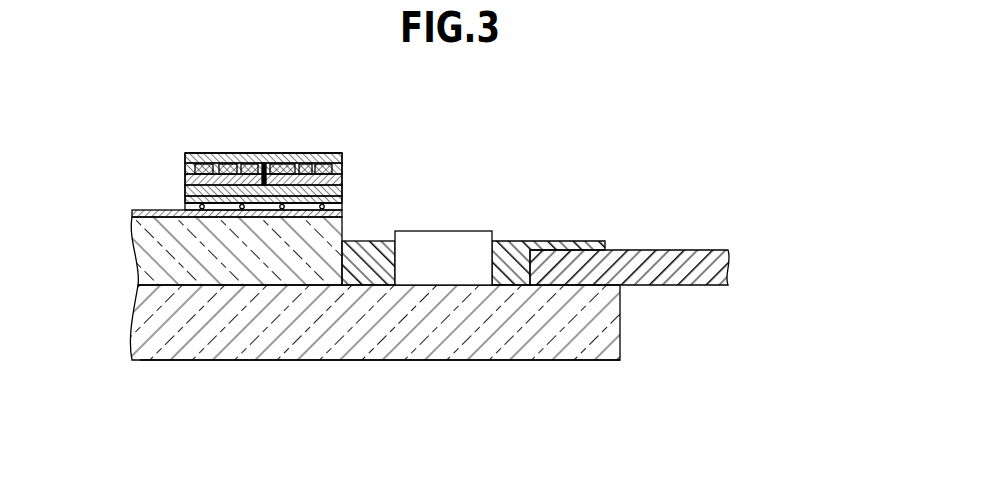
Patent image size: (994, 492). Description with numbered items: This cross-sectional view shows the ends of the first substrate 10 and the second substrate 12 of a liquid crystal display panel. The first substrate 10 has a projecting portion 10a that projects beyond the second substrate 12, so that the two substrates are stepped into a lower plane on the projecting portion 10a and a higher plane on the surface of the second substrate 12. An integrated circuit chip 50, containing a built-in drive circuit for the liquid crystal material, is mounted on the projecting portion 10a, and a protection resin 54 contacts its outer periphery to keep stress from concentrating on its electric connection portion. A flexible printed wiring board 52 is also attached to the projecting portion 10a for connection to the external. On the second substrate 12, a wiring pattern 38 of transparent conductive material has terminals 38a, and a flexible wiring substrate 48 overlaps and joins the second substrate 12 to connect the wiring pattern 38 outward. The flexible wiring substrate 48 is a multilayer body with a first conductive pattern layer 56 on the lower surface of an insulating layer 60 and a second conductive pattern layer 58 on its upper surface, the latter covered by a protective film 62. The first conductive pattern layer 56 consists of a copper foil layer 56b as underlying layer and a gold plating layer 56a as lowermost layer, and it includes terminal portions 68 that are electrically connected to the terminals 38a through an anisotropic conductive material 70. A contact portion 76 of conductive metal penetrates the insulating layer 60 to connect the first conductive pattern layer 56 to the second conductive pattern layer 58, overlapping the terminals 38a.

The first substrate 10 is at (620, 334).
The projecting portion 10a is at (478, 360).
The second substrate 12 is at (302, 271).
The wiring pattern 38 is at (343, 213).
The terminals 38a is at (254, 205).
The flexible wiring substrate 48 is at (323, 239).
The integrated circuit chip 50 is at (464, 231).
The flexible printed wiring board 52 is at (690, 258).
The protection resin 54 is at (378, 250).
The first conductive pattern layer 56 is at (323, 171).
The gold plating layer 56a is at (343, 197).
The copper foil layer 56b is at (343, 181).
The second conductive pattern layer 58 is at (313, 160).
The insulating layer 60 is at (338, 172).
The protective film 62 is at (228, 153).
The terminal portions 68 is at (203, 209).
The anisotropic conductive material 70 is at (196, 207).
The contact portion 76 is at (264, 178).